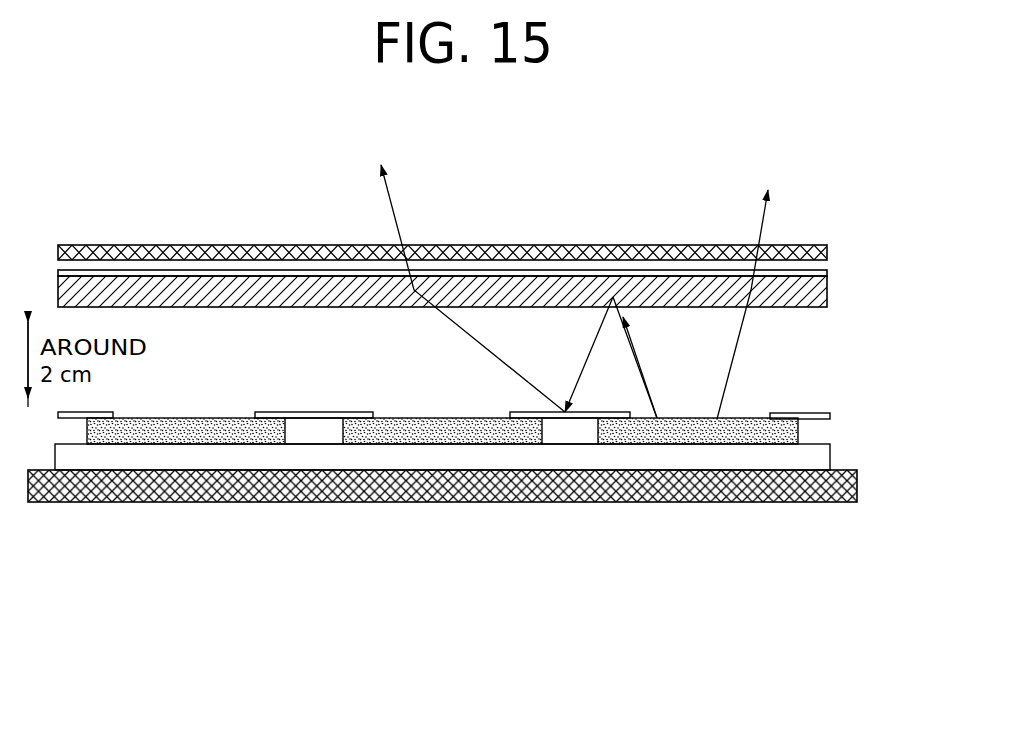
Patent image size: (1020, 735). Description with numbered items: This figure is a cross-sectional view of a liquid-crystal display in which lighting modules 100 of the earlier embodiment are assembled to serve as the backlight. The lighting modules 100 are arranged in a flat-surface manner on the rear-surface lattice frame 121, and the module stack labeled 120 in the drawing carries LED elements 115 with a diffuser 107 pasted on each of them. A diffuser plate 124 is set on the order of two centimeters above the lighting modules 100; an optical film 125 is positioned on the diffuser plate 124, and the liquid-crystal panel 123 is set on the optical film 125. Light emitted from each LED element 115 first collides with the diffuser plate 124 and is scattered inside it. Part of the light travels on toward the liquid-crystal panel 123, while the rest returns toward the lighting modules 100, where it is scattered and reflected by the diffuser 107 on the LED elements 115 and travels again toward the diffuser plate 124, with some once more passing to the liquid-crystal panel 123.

The lighting module 100 is at (153, 455).
The diffuser 107 is at (320, 417).
The LED element 115 is at (225, 428).
The light emitting panel 120 is at (480, 479).
The rear-surface lattice frame 121 is at (395, 502).
The liquid-crystal panel 123 is at (90, 257).
The diffuser plate 124 is at (213, 302).
The optical film 125 is at (142, 273).